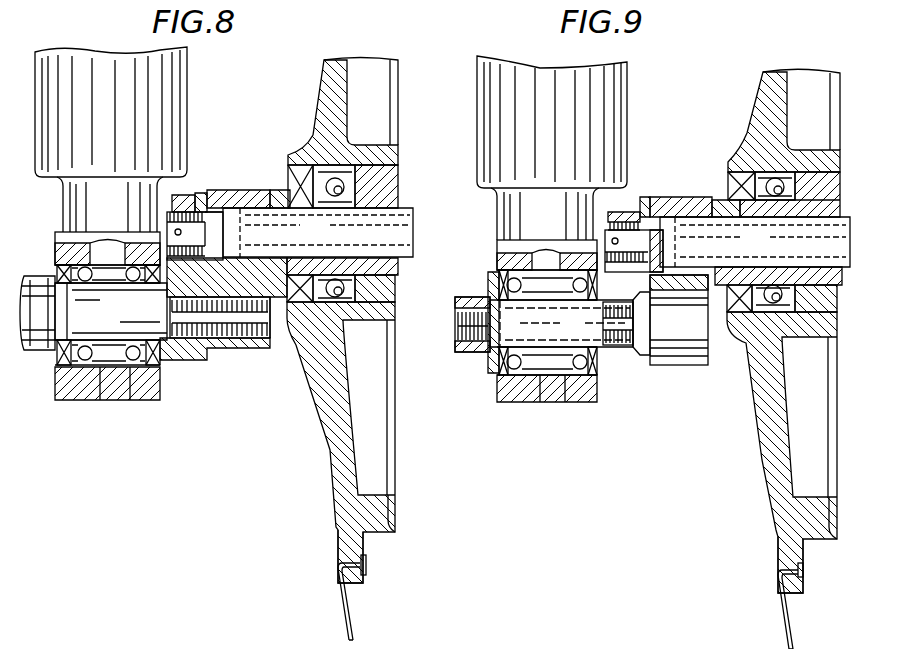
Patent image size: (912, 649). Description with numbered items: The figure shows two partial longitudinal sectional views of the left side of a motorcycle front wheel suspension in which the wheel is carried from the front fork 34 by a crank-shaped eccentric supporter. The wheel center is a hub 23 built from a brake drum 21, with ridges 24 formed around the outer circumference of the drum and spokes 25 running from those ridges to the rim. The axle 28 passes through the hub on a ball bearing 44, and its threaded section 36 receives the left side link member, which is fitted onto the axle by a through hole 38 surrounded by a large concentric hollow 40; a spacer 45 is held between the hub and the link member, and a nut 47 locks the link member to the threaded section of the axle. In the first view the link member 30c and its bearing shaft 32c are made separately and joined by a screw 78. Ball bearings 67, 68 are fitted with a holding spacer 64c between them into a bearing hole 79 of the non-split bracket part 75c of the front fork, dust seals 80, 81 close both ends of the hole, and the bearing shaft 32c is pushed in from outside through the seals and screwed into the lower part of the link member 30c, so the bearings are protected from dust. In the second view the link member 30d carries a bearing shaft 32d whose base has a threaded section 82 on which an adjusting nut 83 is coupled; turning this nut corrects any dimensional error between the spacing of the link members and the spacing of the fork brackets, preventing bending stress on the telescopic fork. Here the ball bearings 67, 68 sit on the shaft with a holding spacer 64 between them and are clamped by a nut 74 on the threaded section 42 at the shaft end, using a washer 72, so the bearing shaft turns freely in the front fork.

In FIG. 8, the brake drum 21 is at (330, 85).
In FIG. 9, the brake drum 21 is at (763, 98).
In FIG. 8, the hub 23 is at (378, 386).
In FIG. 9, the hub 23 is at (817, 391).
In FIG. 8, the ridges 24 is at (340, 535).
In FIG. 9, the ridges 24 is at (782, 545).
In FIG. 8, the spokes 25 is at (353, 613).
In FIG. 9, the spokes 25 is at (783, 619).
In FIG. 8, the axle 28 is at (407, 234).
In FIG. 9, the axle 28 is at (845, 239).
In FIG. 8, the link member 30c is at (233, 357).
In FIG. 9, the link member 30d is at (672, 352).
In FIG. 8, the bearing shaft 32c is at (102, 368).
In FIG. 9, the bearing shaft 32d is at (527, 369).
In FIG. 8, the front fork 34 is at (180, 100).
In FIG. 9, the front fork 34 is at (620, 95).
In FIG. 8, the threaded section 36 is at (200, 194).
In FIG. 9, the threaded section 36 is at (639, 207).
In FIG. 8, the through hole 38 is at (255, 250).
In FIG. 9, the through hole 38 is at (688, 218).
In FIG. 8, the hollow 40 is at (229, 196).
In FIG. 9, the hollow 40 is at (662, 207).
In FIG. 9, the threaded section 42 is at (457, 317).
In FIG. 8, the ball bearing 44 is at (337, 180).
In FIG. 9, the ball bearing 44 is at (768, 214).
In FIG. 8, the spacer 45 is at (277, 197).
In FIG. 9, the spacer 45 is at (722, 212).
In FIG. 8, the nut 47 is at (190, 195).
In FIG. 9, the nut 47 is at (625, 208).
In FIG. 9, the holding spacer 64 is at (548, 290).
In FIG. 8, the holding spacer 64c is at (108, 268).
In FIG. 8, the ball bearing 67 is at (158, 362).
In FIG. 9, the ball bearing 67 is at (583, 373).
In FIG. 8, the ball bearing 68 is at (55, 372).
In FIG. 9, the ball bearing 68 is at (497, 379).
In FIG. 9, the washer 72 is at (488, 272).
In FIG. 9, the nut 74 is at (470, 352).
In FIG. 8, the bracket part 75c is at (72, 390).
In FIG. 8, the screw 78 is at (273, 323).
In FIG. 8, the bearing hole 79 is at (133, 390).
In FIG. 8, the dust seal 80 is at (153, 289).
In FIG. 8, the dust seal 81 is at (57, 270).
In FIG. 9, the threaded section 82 is at (633, 358).
In FIG. 9, the adjusting nut 83 is at (644, 303).